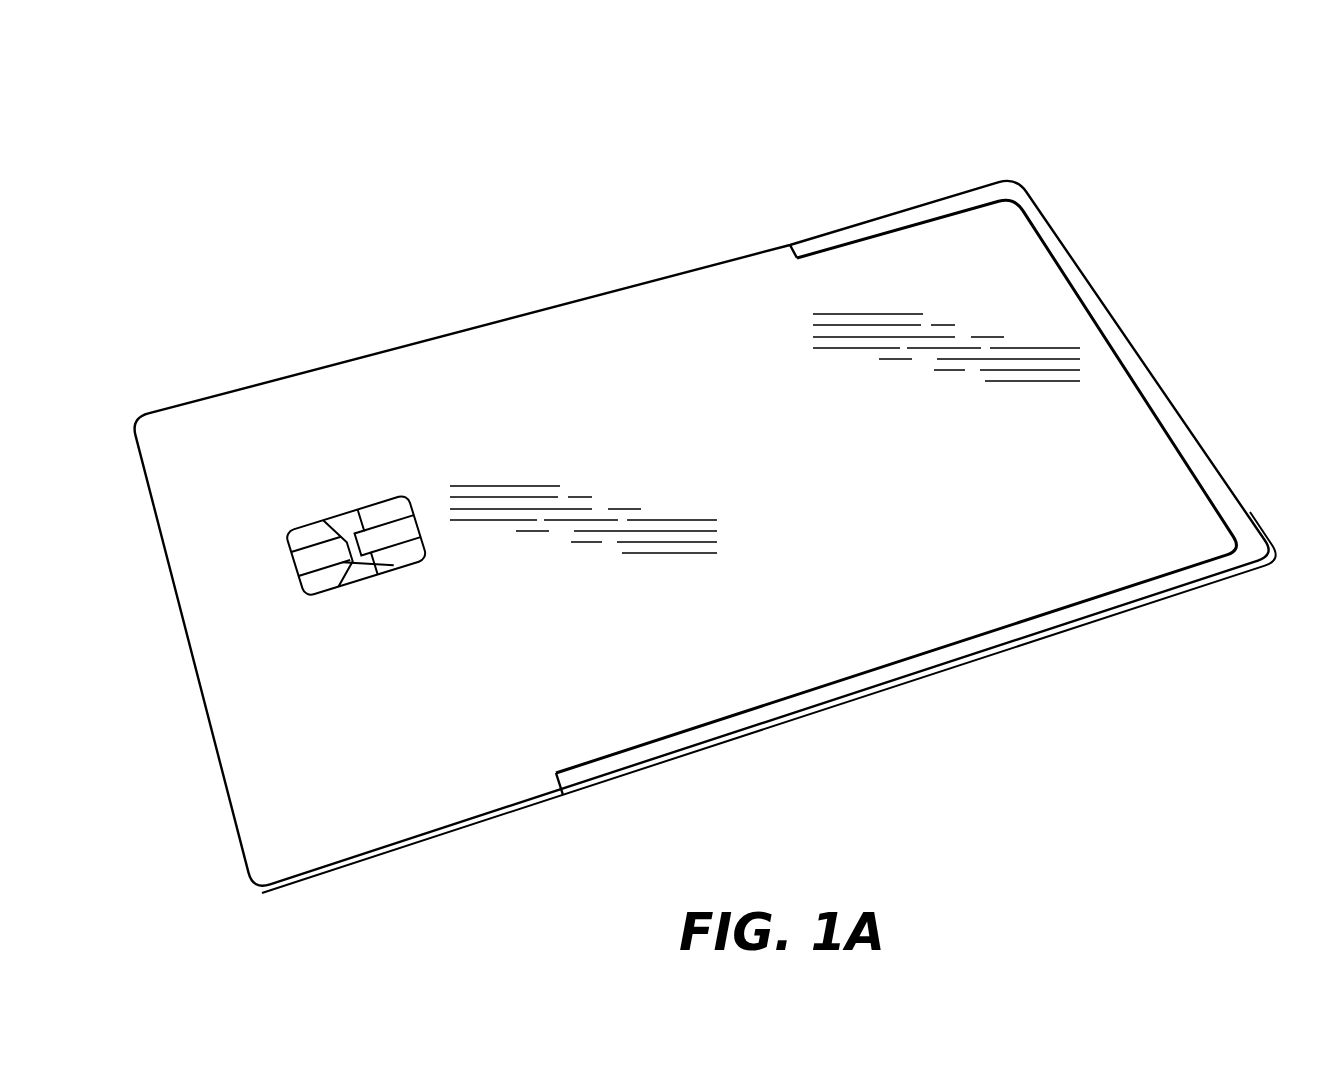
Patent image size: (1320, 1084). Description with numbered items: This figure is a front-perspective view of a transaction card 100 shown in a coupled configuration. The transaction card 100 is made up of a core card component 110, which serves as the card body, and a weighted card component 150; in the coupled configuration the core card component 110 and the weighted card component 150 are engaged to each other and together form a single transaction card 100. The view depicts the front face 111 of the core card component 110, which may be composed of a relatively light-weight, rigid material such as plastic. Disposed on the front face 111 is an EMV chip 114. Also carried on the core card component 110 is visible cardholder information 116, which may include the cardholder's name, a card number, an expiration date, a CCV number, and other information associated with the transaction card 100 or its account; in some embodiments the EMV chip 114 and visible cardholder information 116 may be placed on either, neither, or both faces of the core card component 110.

The transaction card 100 is at (705, 501).
The core card component 110 is at (622, 405).
The front face 111 is at (979, 293).
The EMV chip 114 is at (355, 545).
The visible cardholder information 116 is at (460, 735).
The weighted card component 150 is at (1140, 357).